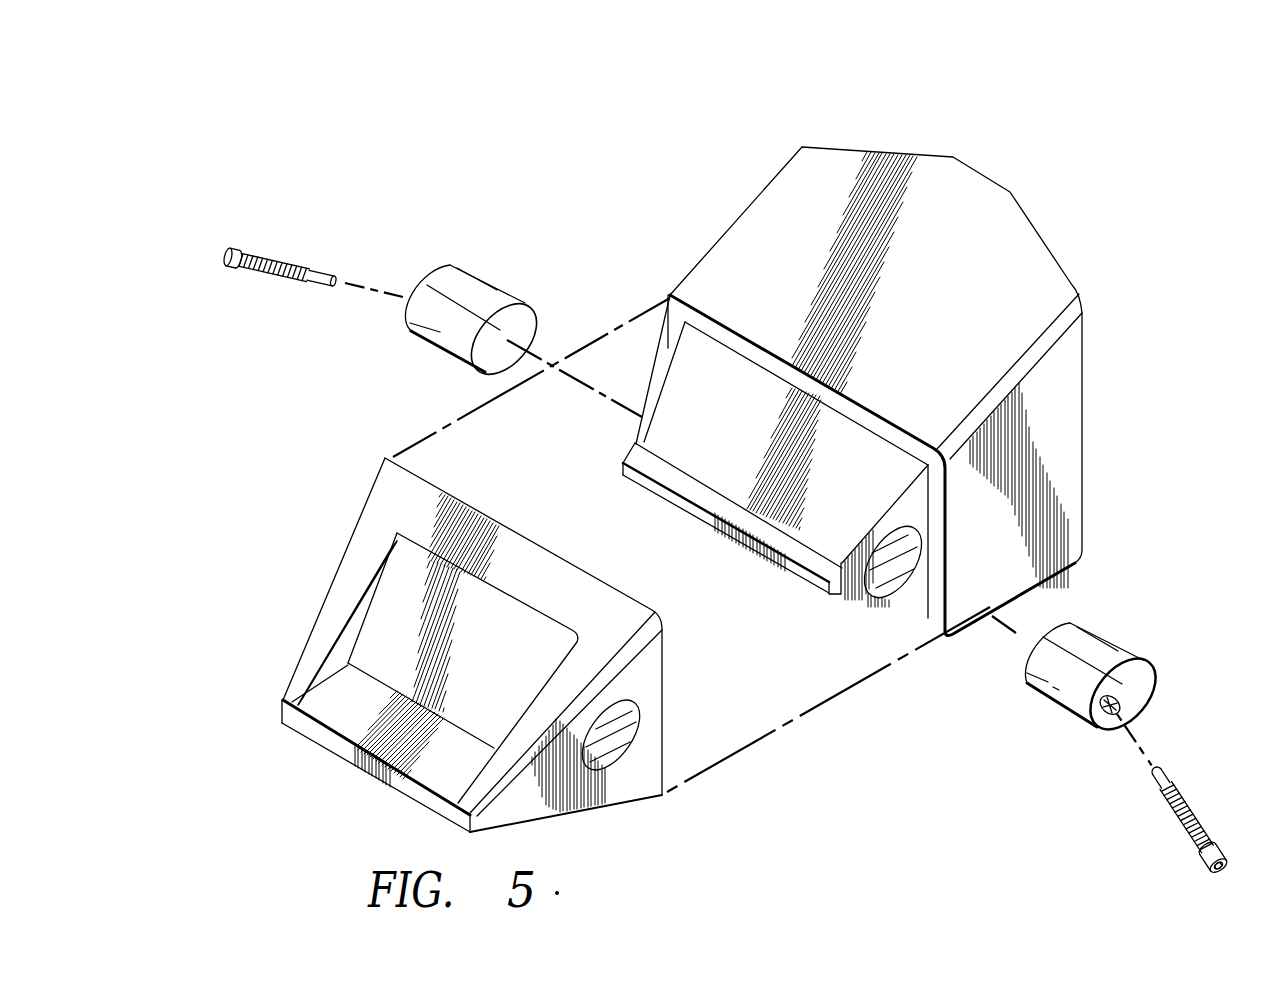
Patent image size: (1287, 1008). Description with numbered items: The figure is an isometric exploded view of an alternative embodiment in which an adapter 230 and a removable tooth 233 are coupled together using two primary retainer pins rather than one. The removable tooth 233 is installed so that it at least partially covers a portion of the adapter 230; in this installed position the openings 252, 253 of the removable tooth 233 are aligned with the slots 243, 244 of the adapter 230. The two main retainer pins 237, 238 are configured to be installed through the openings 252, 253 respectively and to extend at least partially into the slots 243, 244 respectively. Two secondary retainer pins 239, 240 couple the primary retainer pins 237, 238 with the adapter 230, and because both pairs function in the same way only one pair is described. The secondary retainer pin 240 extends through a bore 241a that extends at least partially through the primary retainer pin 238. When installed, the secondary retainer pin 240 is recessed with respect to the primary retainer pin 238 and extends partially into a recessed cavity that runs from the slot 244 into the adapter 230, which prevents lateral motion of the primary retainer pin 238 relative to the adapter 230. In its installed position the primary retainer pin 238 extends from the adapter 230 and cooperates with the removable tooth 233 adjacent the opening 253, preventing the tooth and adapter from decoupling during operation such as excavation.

The adapter 230 is at (848, 356).
The removable tooth 233 is at (466, 649).
The primary retainer pin 237 is at (493, 285).
The primary retainer pin 238 is at (1096, 686).
The secondary retainer pin 239 is at (278, 257).
The secondary retainer pin 240 is at (1200, 820).
The bore 241a is at (1093, 733).
The slot 243 is at (647, 412).
The slot 244 is at (888, 592).
The opening 252 is at (321, 570).
The opening 253 is at (604, 756).